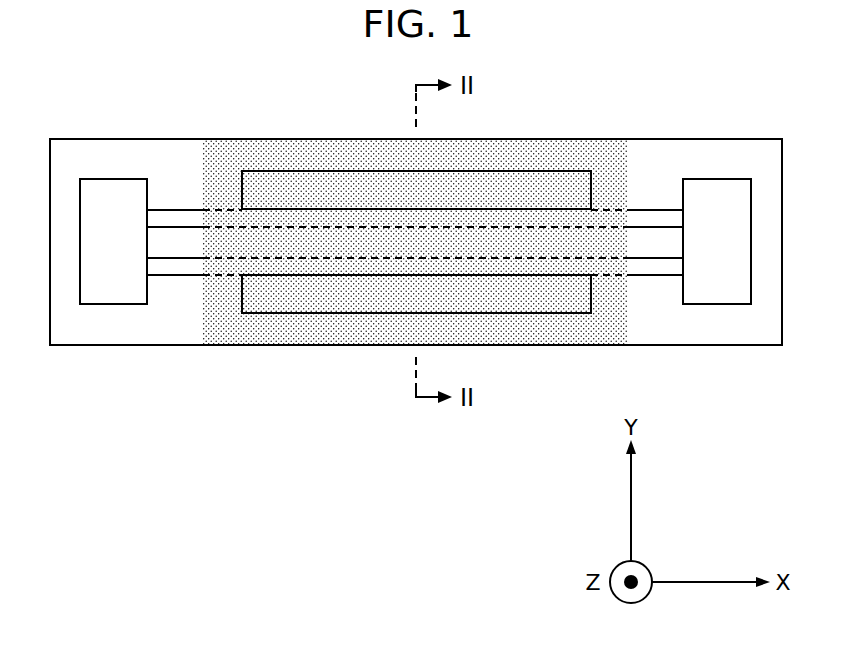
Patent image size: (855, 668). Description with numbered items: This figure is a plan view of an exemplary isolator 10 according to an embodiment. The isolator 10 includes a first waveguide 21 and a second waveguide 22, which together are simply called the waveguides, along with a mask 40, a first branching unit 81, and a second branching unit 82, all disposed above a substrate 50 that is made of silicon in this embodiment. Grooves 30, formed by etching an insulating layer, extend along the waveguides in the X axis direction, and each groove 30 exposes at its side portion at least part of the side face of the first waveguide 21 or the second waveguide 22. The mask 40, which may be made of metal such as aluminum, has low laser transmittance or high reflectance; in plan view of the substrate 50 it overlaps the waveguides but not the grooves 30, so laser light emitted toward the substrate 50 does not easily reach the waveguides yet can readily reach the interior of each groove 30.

The isolator 10 is at (656, 71).
The first waveguide 21 is at (223, 265).
The second waveguide 22 is at (223, 265).
The grooves 30 is at (343, 183).
The mask 40 is at (600, 158).
The substrate 50 is at (718, 158).
The first branching unit 81 is at (115, 294).
The second branching unit 82 is at (722, 292).